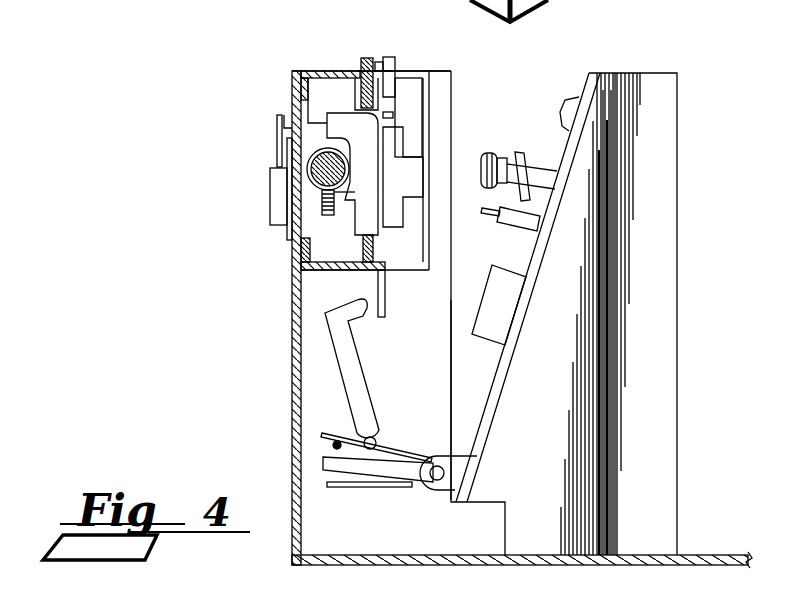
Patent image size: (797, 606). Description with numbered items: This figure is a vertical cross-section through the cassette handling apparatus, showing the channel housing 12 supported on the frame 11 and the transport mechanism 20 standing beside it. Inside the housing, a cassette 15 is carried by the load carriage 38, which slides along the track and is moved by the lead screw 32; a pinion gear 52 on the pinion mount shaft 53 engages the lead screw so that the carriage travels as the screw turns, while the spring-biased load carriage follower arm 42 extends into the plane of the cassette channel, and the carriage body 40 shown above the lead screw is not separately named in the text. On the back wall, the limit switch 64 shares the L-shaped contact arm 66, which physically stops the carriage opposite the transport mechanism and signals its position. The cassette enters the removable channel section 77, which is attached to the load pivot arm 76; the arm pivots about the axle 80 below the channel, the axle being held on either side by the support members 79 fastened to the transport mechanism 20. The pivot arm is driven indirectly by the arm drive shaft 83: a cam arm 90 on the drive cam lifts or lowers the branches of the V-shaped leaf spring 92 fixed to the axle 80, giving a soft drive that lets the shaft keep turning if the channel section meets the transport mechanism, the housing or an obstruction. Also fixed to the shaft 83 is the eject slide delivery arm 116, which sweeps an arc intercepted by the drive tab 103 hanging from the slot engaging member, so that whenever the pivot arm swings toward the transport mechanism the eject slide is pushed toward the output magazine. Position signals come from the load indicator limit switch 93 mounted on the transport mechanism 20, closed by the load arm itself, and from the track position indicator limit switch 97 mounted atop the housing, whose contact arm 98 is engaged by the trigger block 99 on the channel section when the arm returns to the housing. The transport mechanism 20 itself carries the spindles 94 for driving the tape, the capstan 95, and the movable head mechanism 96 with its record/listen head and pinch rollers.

The frame 11 is at (293, 379).
The channel housing 12 is at (306, 71).
The cassettes 15 is at (412, 98).
The transport mechanism 20 is at (565, 140).
The lead screw 32 is at (313, 162).
The load carriage 38 is at (307, 243).
The carrier body 40 is at (343, 120).
The load carriage follower arm 42 is at (392, 145).
The pinion gear 52 is at (358, 195).
The pinion mount shaft 53 is at (340, 200).
The limit switch 64 is at (270, 198).
The L-shaped contact arm 66 is at (277, 139).
The load pivot arm 76 is at (435, 392).
The removable channel section 77 is at (410, 71).
The support members 79 is at (456, 479).
The axle 80 is at (435, 481).
The arm drive shaft 83 is at (362, 454).
The cam arm 90 is at (333, 446).
The leaf spring 92 is at (392, 456).
The load indicator limit switch 93 is at (572, 94).
The spindles 94 is at (486, 154).
The capstan 95 is at (486, 218).
The head mechanism 96 is at (498, 302).
The track position indicator limit switch 97 is at (366, 58).
The contact arm 98 is at (379, 61).
The trigger block 99 is at (391, 57).
The drive tab 103 is at (378, 286).
The eject slide delivery arm 116 is at (355, 373).